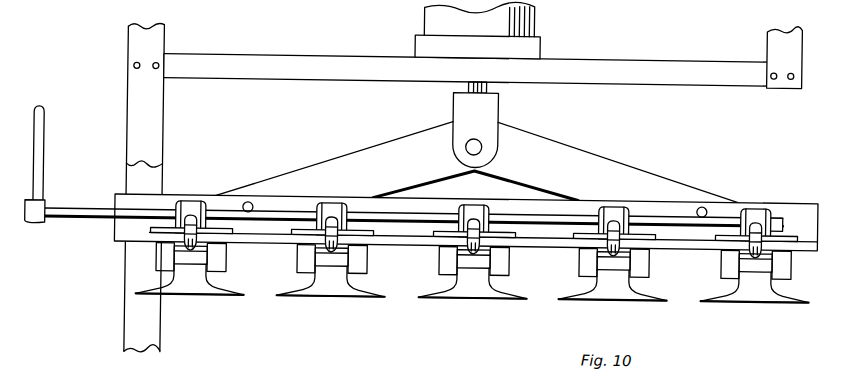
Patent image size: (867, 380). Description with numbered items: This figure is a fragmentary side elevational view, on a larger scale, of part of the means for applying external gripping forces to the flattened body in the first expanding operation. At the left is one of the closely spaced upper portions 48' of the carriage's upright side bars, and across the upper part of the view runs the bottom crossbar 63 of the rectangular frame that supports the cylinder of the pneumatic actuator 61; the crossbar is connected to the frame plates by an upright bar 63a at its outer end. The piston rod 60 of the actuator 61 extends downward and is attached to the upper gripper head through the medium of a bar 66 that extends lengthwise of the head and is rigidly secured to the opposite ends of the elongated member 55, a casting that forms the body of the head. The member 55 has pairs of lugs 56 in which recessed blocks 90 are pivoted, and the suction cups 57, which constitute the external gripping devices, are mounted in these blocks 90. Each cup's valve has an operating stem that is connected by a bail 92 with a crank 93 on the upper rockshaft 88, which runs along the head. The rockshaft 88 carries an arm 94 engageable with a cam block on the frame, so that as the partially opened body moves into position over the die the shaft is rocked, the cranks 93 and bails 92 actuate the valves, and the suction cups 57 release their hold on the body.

The upper portions of upright side bars 48' is at (123, 187).
The elongated member 55 is at (122, 227).
The lugs 56 is at (166, 258).
The suction cups 57 is at (205, 299).
The piston rod 60 is at (467, 88).
The pneumatic actuator 61 is at (418, 23).
The bottom crossbar 63 is at (709, 82).
The upright bar 63a is at (775, 48).
The bar 66 is at (594, 162).
The upper rockshaft 88 is at (92, 213).
The recessed blocks 90 is at (203, 259).
The bail 92 is at (613, 224).
The crank 93 is at (188, 209).
The arm 94 is at (42, 119).